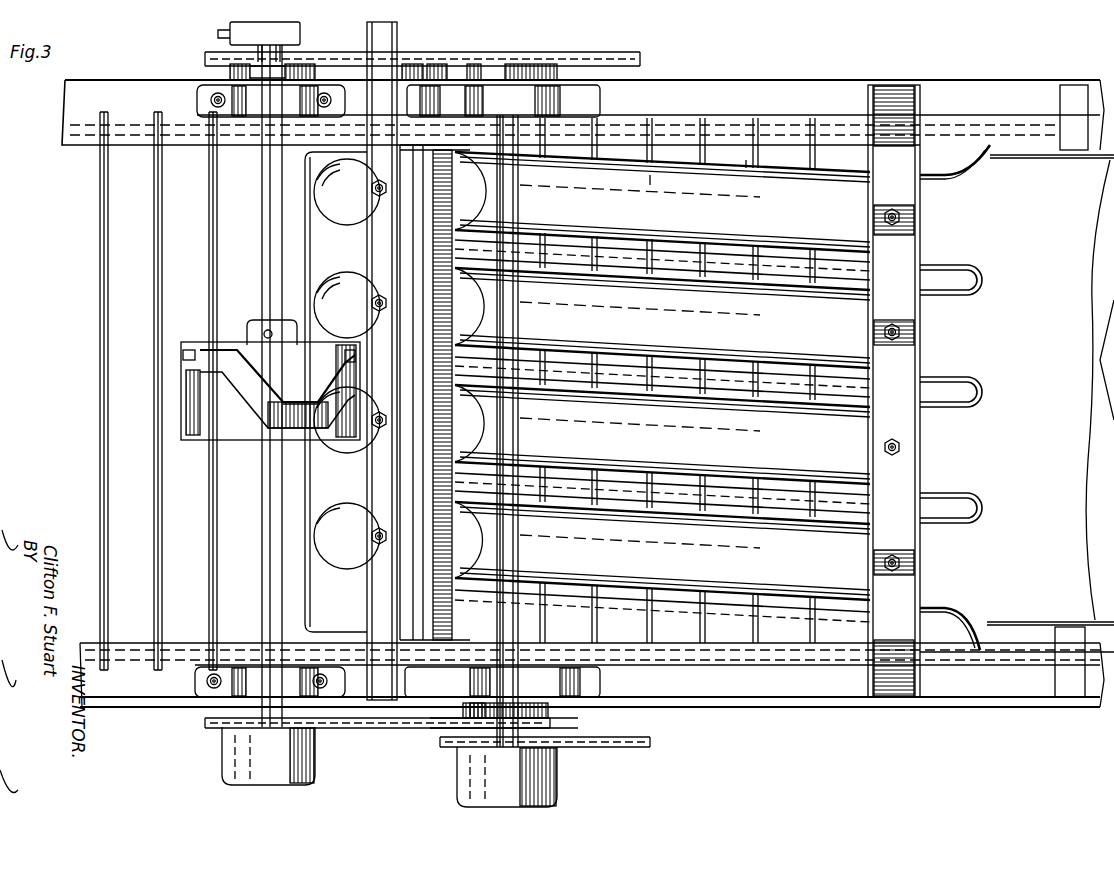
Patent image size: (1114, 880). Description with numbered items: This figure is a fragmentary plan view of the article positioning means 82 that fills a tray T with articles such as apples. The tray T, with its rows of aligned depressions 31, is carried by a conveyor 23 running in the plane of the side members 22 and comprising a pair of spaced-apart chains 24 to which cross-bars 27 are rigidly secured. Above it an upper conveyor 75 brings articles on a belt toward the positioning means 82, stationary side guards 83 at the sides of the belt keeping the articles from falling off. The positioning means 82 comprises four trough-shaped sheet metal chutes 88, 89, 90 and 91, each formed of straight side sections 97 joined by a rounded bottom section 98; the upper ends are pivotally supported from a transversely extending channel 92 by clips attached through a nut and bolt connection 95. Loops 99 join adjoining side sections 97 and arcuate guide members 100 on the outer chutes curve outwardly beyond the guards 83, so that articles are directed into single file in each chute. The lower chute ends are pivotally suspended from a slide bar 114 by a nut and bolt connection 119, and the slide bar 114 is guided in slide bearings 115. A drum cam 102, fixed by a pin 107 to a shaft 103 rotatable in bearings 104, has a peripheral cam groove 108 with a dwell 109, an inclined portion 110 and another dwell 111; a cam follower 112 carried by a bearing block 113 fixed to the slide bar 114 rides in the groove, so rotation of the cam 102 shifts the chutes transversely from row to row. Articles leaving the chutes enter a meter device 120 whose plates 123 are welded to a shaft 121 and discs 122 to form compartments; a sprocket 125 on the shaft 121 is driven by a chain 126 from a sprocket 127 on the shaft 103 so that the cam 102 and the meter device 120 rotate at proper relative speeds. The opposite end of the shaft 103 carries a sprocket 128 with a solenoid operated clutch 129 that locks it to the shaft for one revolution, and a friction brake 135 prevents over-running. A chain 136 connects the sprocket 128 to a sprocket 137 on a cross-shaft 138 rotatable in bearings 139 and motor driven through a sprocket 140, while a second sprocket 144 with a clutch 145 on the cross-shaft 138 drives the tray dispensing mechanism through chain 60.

The article positioning means 82 is at (814, 72).
The side members 22 is at (940, 80).
The conveyor 23 is at (88, 259).
The chains 24 is at (92, 130).
The cross-bars 27 is at (154, 312).
The depressions 31 is at (326, 189).
The chain 60 is at (645, 750).
The conveyor 75 is at (1092, 398).
The side guards 83 is at (1063, 160).
The chute 88 is at (852, 230).
The chute 89 is at (855, 334).
The chute 90 is at (855, 449).
The chute 91 is at (855, 570).
The channel 92 is at (900, 578).
The nut and bolt connection 95 is at (900, 333).
The side sections 97 is at (654, 185).
The bottom section 98 is at (846, 235).
The loops 99 is at (983, 278).
The guide members 100 is at (972, 172).
The drum cam 102 is at (185, 392).
The shaft 103 is at (273, 528).
The bearings 104 is at (215, 92).
The pin 107 is at (262, 327).
The cam groove 108 is at (256, 440).
The dwell 109 is at (186, 350).
The inclined portion 110 is at (250, 384).
The dwell 111 is at (296, 410).
The cam follower 112 is at (348, 352).
The bearing block 113 is at (370, 340).
The slide bar 114 is at (372, 598).
The slide bearings 115 is at (400, 72).
The nut and bolt connection 119 is at (376, 196).
The meter device 120 is at (440, 548).
The shaft 121 is at (420, 646).
The discs 122 is at (475, 86).
The plates 123 is at (440, 196).
The sprocket 125 is at (430, 96).
The chain 126 is at (308, 62).
The sprocket 127 is at (232, 72).
The sprocket 128 is at (205, 720).
The solenoid operated clutch 129 is at (232, 772).
The friction brake 135 is at (296, 35).
The chain 136 is at (412, 725).
The sprocket 137 is at (580, 727).
The cross-shaft 138 is at (520, 445).
The bearings 139 is at (600, 92).
The sprocket 140 is at (560, 95).
The sprocket 144 is at (540, 748).
The solenoid operated clutch 145 is at (560, 795).
The tray T is at (318, 580).